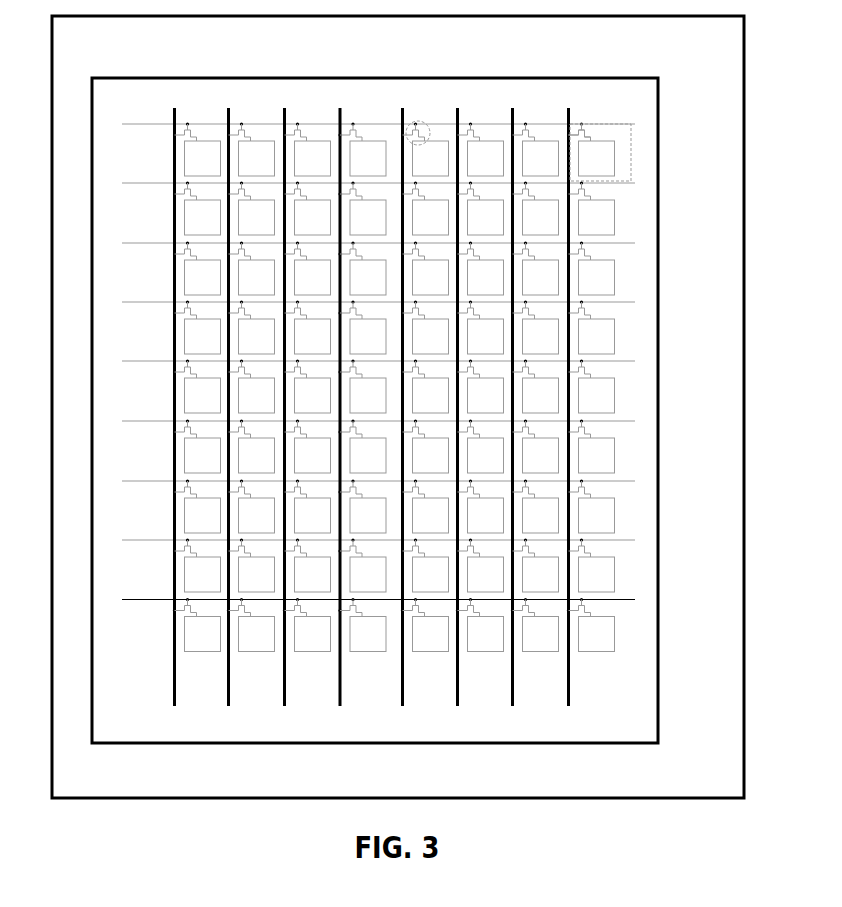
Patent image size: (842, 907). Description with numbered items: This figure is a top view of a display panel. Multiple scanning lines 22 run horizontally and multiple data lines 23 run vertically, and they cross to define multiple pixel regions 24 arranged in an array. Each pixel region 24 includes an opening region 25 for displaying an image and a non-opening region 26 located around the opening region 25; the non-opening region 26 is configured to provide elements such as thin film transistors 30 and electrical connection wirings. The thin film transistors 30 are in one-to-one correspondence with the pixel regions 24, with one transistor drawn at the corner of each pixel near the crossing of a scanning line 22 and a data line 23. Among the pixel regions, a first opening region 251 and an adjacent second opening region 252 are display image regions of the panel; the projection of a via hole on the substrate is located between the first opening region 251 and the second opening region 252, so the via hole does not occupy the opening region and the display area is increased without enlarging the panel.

The scanning line 22 is at (490, 124).
The data line 23 is at (570, 112).
The pixel region 24 is at (631, 153).
The opening region 25 is at (605, 167).
The non-opening region 26 is at (617, 135).
The thin film transistor 30 is at (418, 121).
The first opening region 251 is at (258, 155).
The second opening region 252 is at (313, 147).